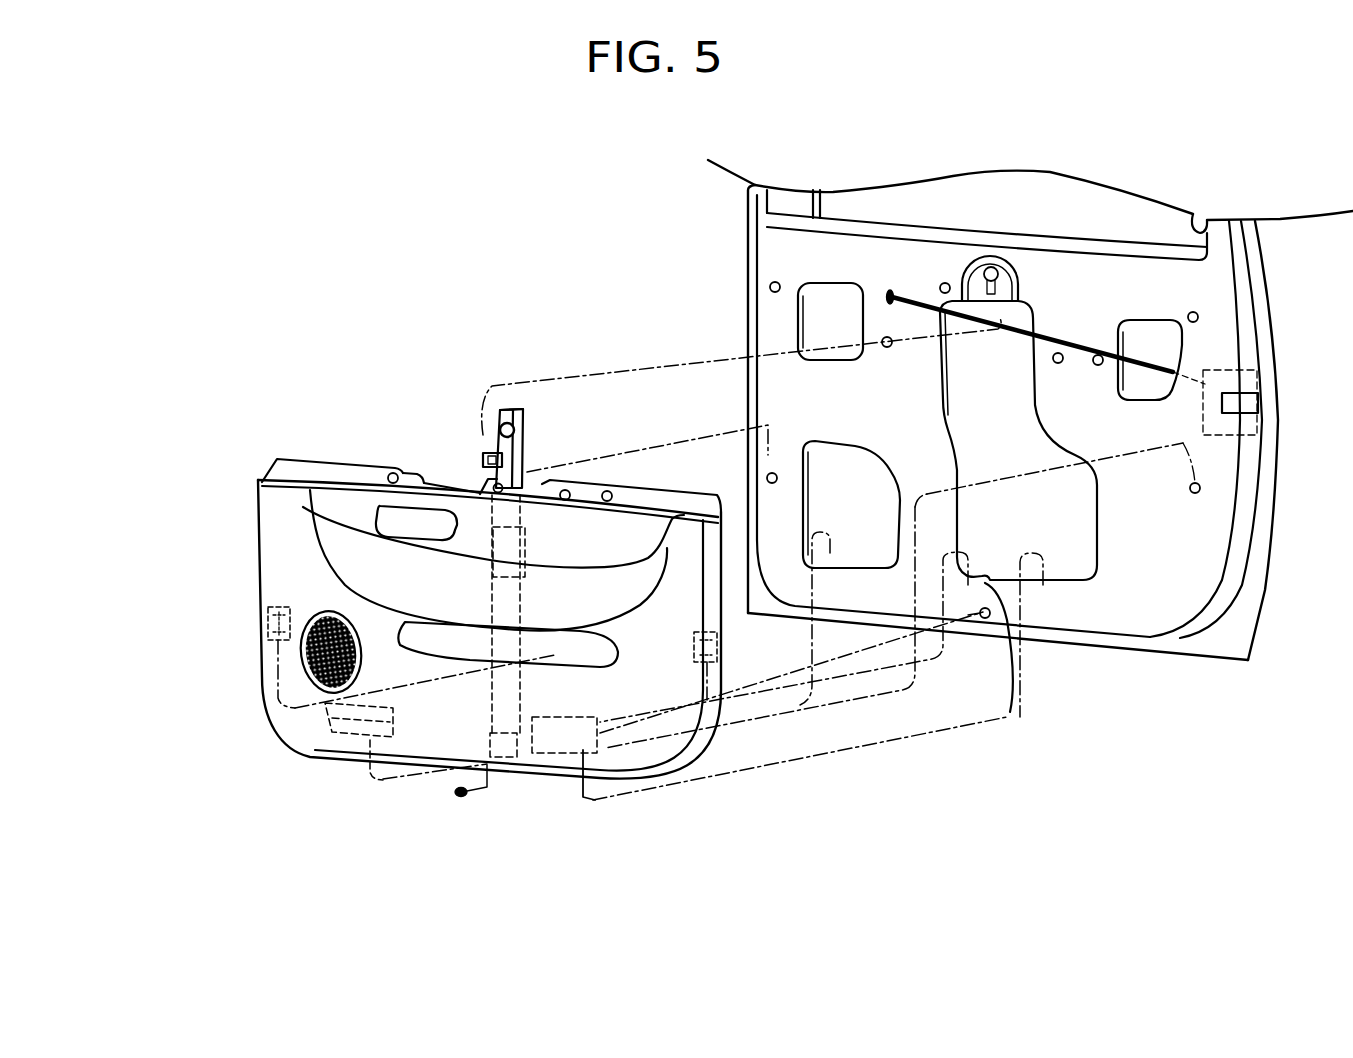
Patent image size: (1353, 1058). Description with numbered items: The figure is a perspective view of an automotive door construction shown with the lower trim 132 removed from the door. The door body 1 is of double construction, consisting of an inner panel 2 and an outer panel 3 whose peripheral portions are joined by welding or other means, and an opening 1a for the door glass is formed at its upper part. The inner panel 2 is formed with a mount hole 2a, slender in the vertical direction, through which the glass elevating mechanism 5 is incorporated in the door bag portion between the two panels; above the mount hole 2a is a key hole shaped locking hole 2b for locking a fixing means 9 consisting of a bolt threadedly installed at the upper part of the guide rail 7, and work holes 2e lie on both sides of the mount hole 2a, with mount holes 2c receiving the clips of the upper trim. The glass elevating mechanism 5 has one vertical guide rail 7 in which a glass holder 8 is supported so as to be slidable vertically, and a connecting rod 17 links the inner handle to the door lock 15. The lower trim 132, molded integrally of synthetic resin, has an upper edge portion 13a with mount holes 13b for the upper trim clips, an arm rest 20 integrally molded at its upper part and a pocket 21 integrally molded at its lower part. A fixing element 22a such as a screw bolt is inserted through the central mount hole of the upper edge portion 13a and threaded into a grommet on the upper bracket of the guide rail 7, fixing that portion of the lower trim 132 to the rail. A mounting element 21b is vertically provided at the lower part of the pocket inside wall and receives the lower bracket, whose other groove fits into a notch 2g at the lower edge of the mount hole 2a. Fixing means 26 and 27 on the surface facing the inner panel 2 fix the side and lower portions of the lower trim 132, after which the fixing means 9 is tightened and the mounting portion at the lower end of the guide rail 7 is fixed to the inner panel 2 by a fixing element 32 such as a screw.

The door body 1 is at (1273, 556).
The opening 1a is at (1196, 212).
The inner panel 2 is at (1205, 283).
The mount hole 2a is at (1066, 565).
The locking hole 2b is at (995, 262).
The mount holes 2c is at (767, 282).
The work holes 2e is at (808, 325).
The notch 2g is at (1010, 712).
The outer panel 3 is at (1273, 368).
The glass elevating mechanism 5 is at (527, 460).
The guide rail 7 is at (527, 417).
The glass holder 8 is at (483, 458).
The fixing means 9 is at (503, 425).
The upper edge portion 13a is at (310, 467).
The mount holes 13b is at (393, 473).
The lower trim 132 is at (270, 568).
The door lock 15 is at (1248, 403).
The connecting rod 17 is at (1046, 330).
The arm rest 20 is at (336, 525).
The pocket 21 is at (458, 643).
The mounting element 21b is at (527, 760).
The fixing element 22a is at (496, 493).
The fixing means 26 is at (268, 632).
The fixing means 27 is at (347, 730).
The fixing element 32 is at (462, 797).